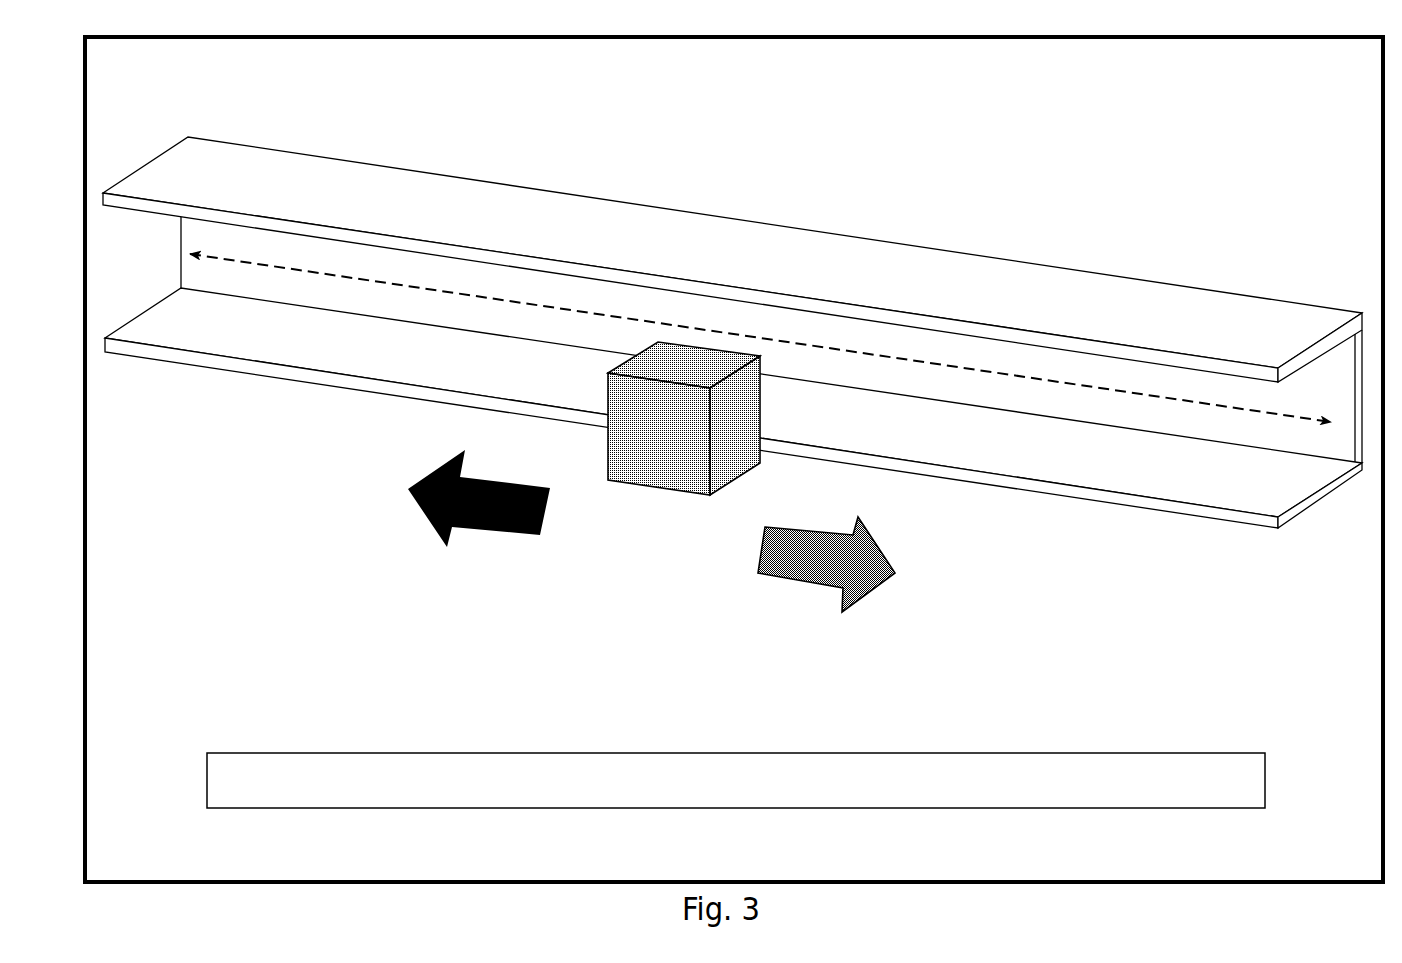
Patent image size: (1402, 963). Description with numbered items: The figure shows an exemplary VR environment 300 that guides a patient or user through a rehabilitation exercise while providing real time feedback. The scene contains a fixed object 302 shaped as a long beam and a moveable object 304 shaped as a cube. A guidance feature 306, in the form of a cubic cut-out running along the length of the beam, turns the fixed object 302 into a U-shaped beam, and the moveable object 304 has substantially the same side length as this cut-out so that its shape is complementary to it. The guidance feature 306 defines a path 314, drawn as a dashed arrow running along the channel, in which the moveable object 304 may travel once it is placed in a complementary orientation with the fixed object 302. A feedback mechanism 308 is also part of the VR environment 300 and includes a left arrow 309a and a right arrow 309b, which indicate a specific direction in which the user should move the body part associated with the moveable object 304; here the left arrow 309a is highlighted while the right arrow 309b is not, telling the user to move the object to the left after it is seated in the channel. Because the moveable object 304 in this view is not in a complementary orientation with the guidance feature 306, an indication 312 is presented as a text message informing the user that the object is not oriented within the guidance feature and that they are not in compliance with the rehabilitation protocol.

The VR environment 300 is at (228, 30).
The fixed object 302 is at (453, 196).
The moveable object 304 is at (677, 476).
The guidance feature 306 is at (400, 314).
The feedback mechanism 308 is at (995, 584).
The left arrow 309a is at (473, 536).
The right arrow 309b is at (877, 588).
The indication 312 is at (200, 786).
The path 314 is at (902, 353).